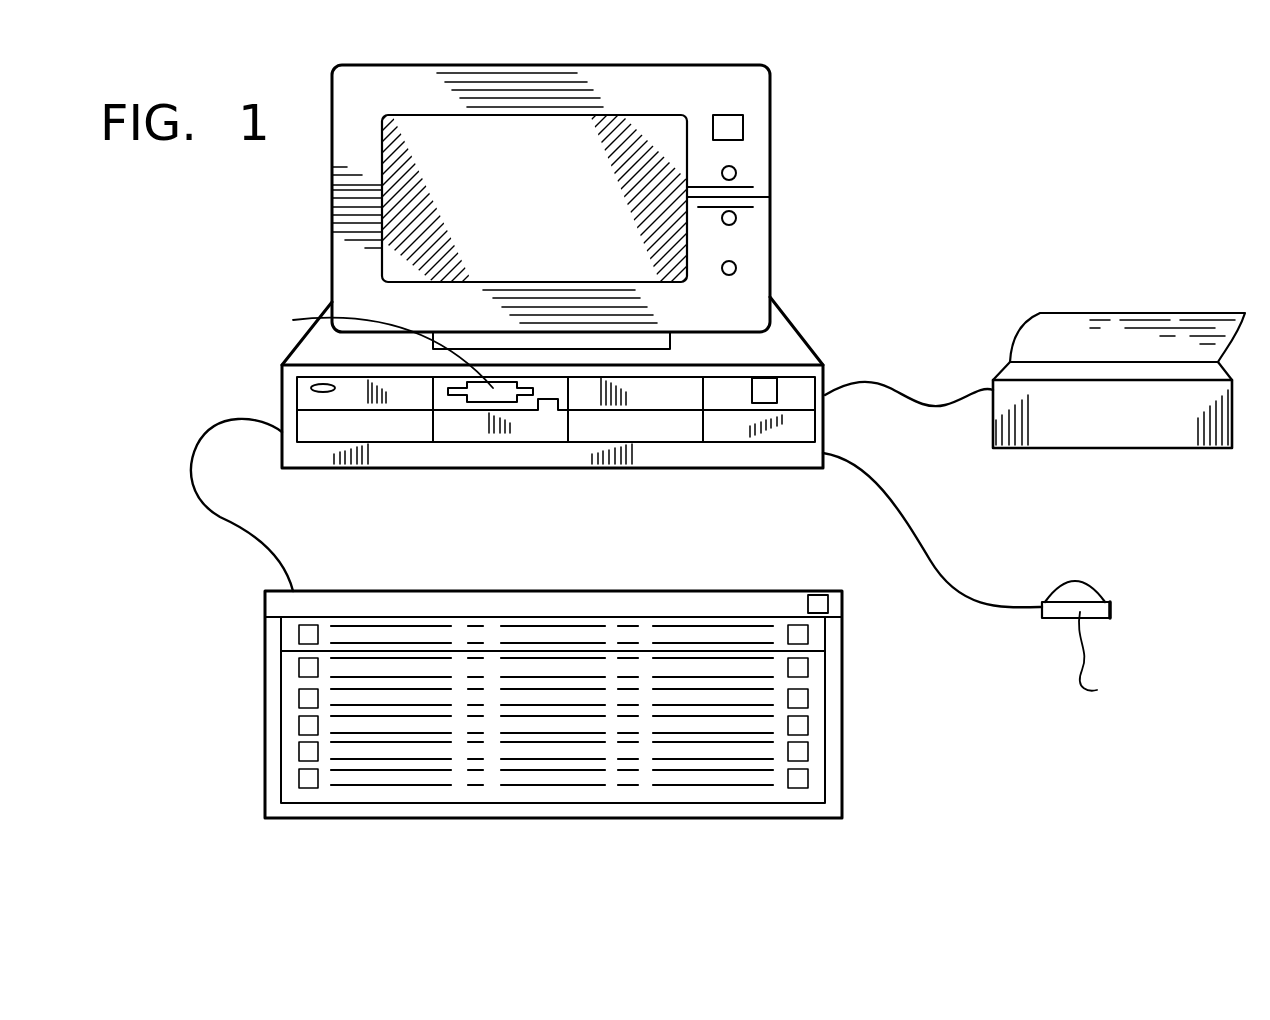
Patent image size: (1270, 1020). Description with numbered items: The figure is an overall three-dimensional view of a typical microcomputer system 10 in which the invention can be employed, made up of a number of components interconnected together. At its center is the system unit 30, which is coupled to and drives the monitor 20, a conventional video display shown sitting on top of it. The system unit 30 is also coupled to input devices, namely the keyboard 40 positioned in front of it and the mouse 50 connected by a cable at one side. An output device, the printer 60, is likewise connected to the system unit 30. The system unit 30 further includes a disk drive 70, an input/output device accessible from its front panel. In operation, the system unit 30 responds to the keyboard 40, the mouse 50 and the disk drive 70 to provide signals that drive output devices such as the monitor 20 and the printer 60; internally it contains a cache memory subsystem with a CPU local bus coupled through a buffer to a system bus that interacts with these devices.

The microcomputer system 10 is at (914, 148).
The monitor 20 is at (597, 65).
The system unit 30 is at (803, 333).
The keyboard 40 is at (842, 641).
The mouse 50 is at (1068, 587).
The printer 60 is at (1080, 448).
The disk drive 70 is at (488, 398).